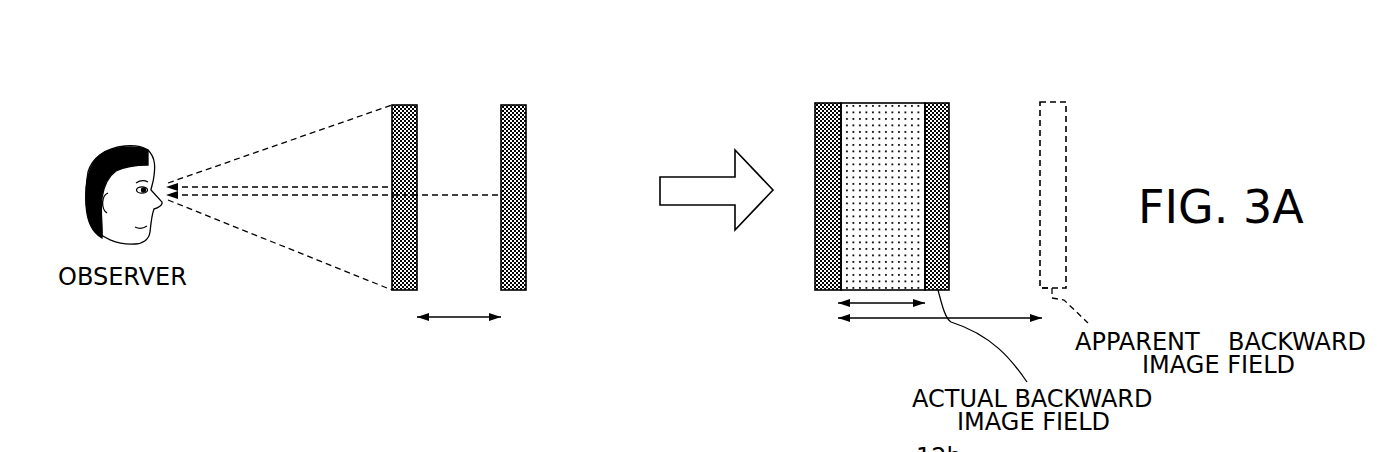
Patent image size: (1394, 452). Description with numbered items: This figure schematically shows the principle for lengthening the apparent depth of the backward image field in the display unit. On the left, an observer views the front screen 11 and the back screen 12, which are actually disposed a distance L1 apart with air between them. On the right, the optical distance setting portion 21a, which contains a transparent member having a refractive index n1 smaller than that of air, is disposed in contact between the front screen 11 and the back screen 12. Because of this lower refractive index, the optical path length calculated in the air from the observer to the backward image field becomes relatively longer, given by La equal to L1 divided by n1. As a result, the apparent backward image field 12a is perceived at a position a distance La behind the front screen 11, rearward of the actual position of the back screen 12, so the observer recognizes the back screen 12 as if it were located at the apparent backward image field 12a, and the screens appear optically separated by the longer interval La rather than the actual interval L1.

The front screen 11 is at (403, 105).
The back screen 12 is at (510, 105).
The optical distance setting portion 21a is at (882, 103).
The apparent backward image field 12a is at (1056, 100).
The distance L1 is at (897, 303).
The optical path length La is at (858, 318).